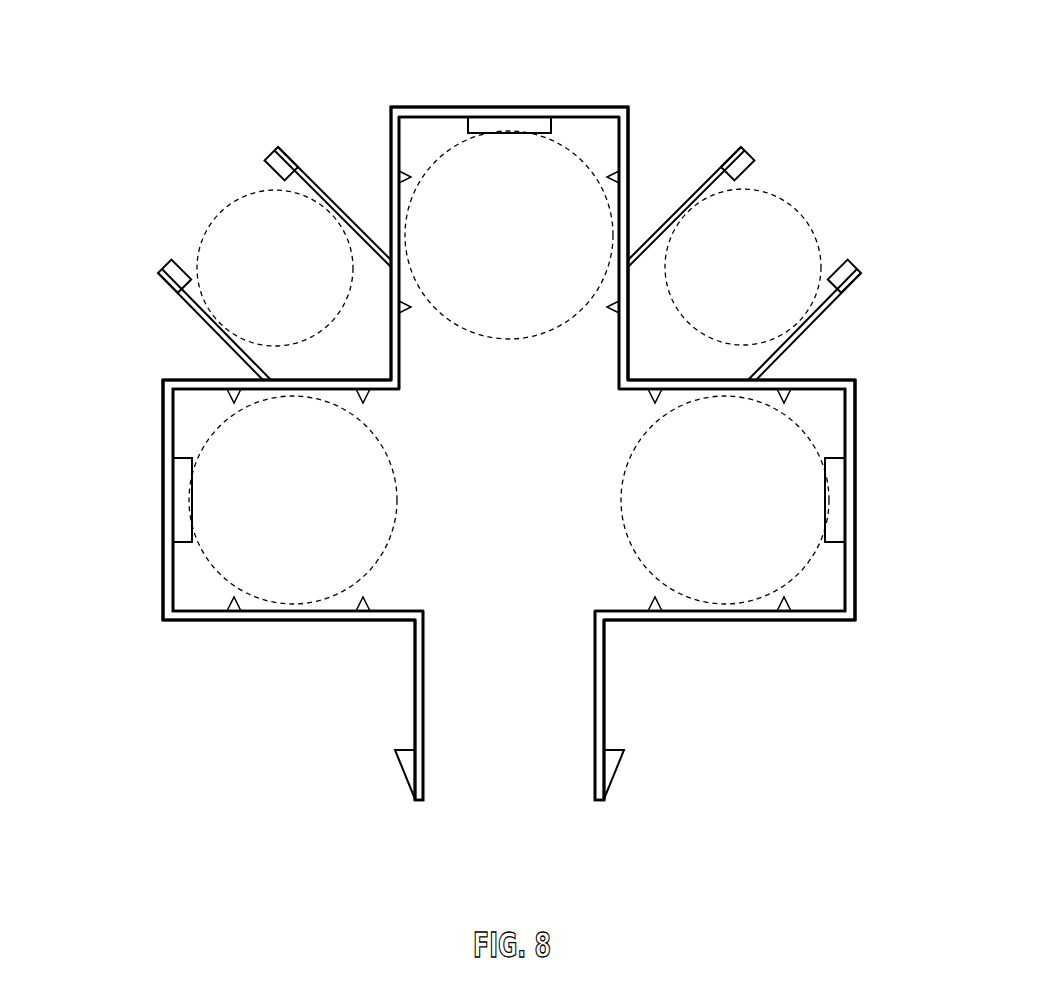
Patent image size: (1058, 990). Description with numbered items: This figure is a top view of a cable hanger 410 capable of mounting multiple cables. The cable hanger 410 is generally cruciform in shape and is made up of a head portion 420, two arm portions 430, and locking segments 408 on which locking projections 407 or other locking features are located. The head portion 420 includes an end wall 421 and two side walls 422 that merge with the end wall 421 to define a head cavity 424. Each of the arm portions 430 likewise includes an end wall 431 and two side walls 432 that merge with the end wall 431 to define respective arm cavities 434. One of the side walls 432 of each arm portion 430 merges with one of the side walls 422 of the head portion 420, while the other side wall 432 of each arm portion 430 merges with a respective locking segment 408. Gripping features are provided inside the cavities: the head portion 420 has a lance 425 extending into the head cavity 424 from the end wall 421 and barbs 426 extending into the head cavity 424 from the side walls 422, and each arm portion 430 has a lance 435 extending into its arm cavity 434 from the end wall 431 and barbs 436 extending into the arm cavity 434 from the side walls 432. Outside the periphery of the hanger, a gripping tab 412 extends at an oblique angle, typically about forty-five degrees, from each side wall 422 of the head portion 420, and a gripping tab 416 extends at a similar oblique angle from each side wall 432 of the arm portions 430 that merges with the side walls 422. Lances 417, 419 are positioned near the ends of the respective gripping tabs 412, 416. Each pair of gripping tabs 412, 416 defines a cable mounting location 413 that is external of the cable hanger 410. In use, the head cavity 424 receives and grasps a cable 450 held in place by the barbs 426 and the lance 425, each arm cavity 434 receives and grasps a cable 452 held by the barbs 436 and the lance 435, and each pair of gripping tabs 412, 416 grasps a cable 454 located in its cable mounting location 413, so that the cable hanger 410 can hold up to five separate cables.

The locking projection 407 is at (400, 762).
The locking segment 408 is at (415, 661).
The cable hanger 410 is at (905, 597).
The gripping tab 412 is at (310, 179).
The cable mounting location 413 is at (376, 301).
The gripping tab 416 is at (185, 301).
The lance 417 is at (265, 161).
The lance 419 is at (168, 260).
The head portion 420 is at (648, 113).
The end wall 421 is at (566, 107).
The side wall 422 is at (399, 176).
The head cavity 424 is at (612, 152).
The lance 425 is at (490, 126).
The barb 426 is at (402, 176).
The arm portion 430 is at (122, 571).
The end wall 431 is at (163, 408).
The side wall 432 is at (192, 379).
The arm cavity 434 is at (193, 591).
The lance 435 is at (182, 496).
The barb 436 is at (233, 392).
The cable 450 is at (573, 147).
The cable 452 is at (257, 605).
The cable 454 is at (220, 210).